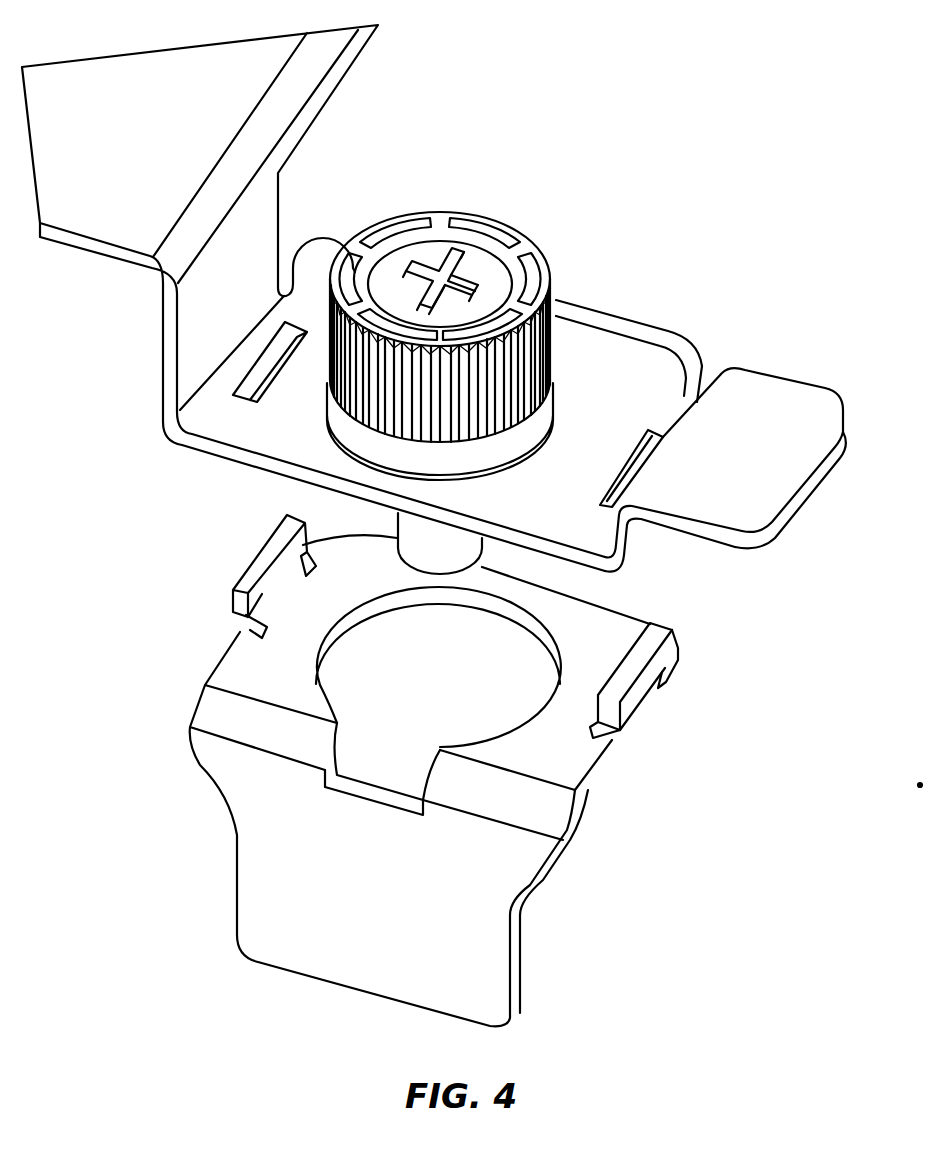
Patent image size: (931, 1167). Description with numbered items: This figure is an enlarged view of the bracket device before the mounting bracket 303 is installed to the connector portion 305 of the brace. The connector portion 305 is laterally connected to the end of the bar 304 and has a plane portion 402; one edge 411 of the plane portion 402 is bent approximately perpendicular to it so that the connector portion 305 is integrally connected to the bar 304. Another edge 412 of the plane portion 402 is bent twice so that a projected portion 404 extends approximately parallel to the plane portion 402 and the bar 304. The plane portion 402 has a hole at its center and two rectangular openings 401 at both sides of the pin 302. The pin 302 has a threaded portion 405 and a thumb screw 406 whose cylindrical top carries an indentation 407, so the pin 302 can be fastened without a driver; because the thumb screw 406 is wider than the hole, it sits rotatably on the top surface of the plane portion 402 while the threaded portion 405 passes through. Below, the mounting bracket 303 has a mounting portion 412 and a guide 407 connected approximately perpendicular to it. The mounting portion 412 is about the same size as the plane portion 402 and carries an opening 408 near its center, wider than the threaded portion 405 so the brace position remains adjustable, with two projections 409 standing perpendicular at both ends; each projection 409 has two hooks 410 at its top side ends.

The pin 302 is at (495, 184).
The mounting bracket 303 is at (205, 808).
The bar 304 is at (112, 215).
The connector portion 305 is at (178, 466).
The rectangular openings 401 is at (272, 372).
The plane portion 402 is at (580, 510).
The projected portion 404 is at (770, 400).
The threaded portion 405 is at (397, 514).
The thumb screw 406 is at (473, 250).
The indentation 407 is at (553, 283).
The opening 408 is at (477, 697).
The projections 409 is at (260, 558).
The hooks 410 is at (295, 518).
The edge 411 is at (162, 340).
The mounting portion 412 is at (818, 487).